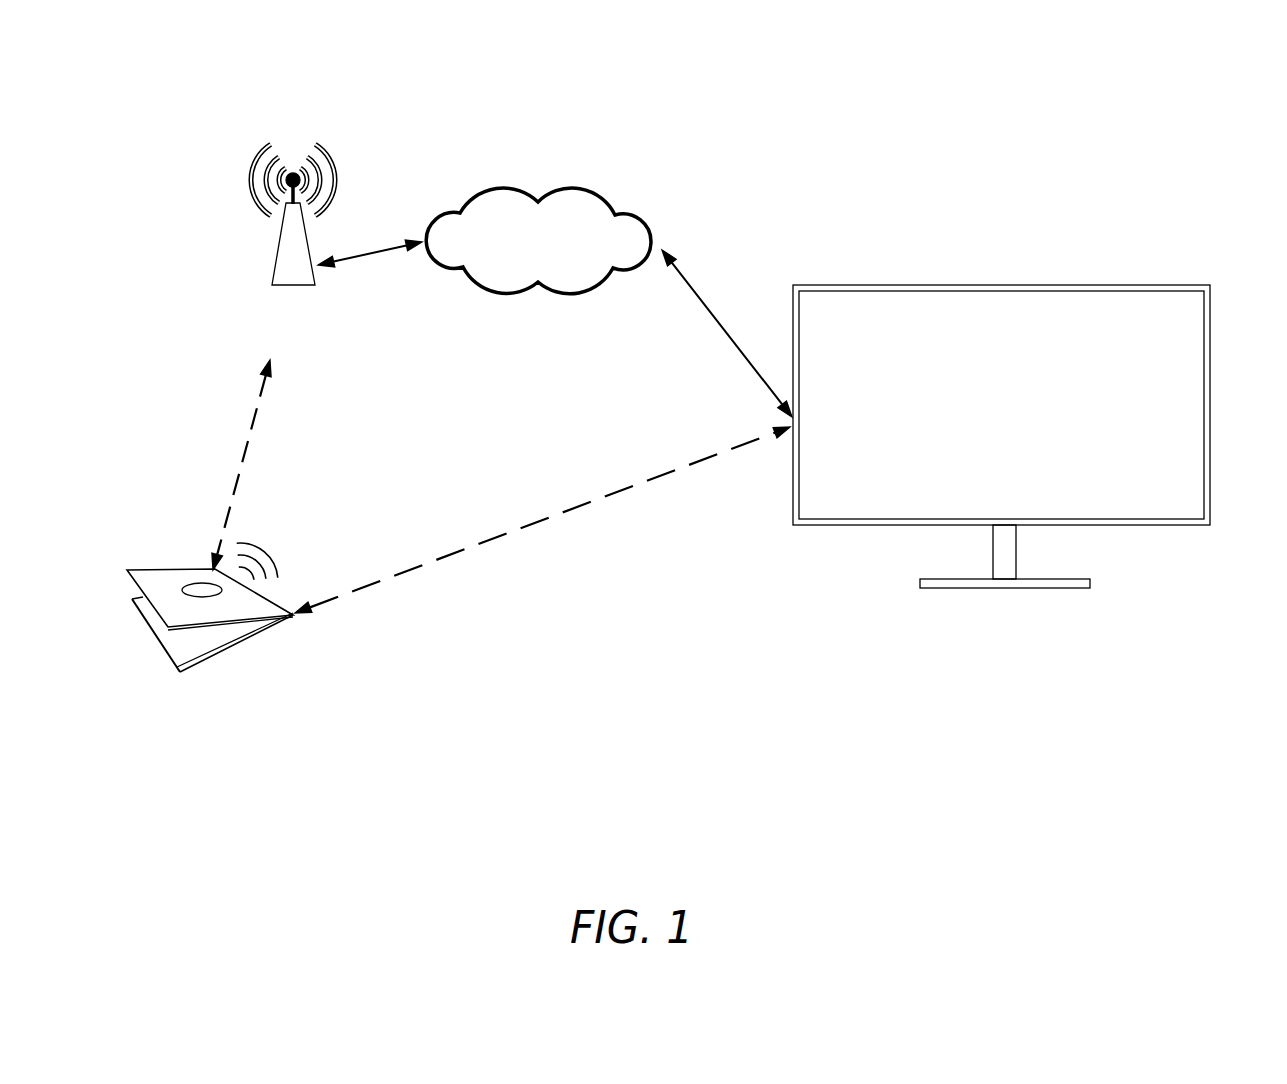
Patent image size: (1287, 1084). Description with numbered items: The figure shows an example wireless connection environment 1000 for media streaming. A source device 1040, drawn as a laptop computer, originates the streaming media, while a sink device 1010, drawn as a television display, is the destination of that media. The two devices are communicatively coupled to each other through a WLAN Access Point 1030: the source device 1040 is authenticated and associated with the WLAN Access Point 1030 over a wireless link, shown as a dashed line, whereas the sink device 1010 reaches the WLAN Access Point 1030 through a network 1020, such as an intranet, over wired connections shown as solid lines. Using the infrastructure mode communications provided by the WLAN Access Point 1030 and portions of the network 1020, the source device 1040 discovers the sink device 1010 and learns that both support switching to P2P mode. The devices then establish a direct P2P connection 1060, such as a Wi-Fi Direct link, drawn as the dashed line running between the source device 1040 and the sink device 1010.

The wireless connection environment 1000 is at (1188, 79).
The sink device 1010 is at (1005, 285).
The network 1020 is at (538, 286).
The WLAN Access Point 1030 is at (337, 317).
The source device 1040 is at (279, 576).
The P2P connection 1060 is at (550, 517).